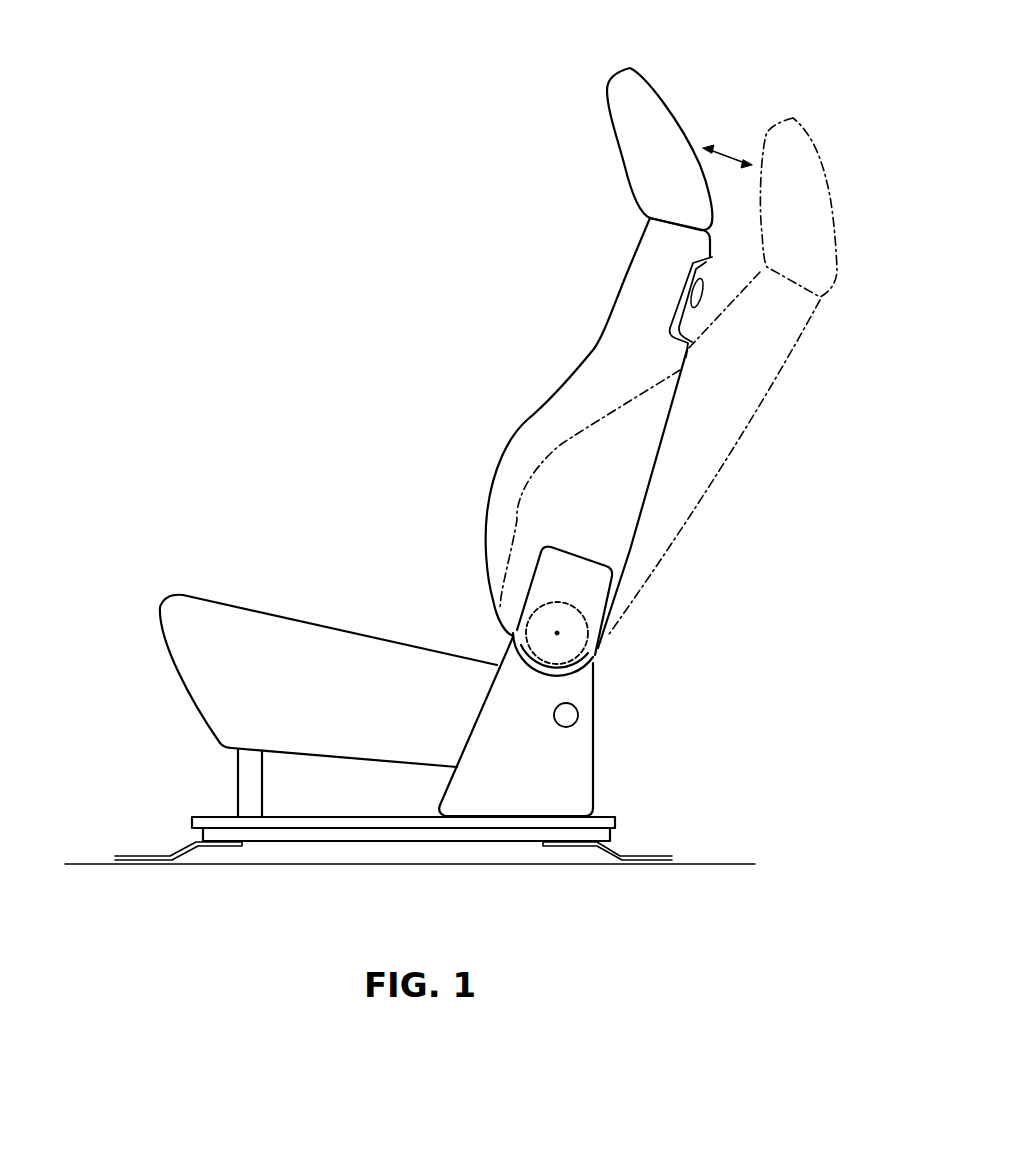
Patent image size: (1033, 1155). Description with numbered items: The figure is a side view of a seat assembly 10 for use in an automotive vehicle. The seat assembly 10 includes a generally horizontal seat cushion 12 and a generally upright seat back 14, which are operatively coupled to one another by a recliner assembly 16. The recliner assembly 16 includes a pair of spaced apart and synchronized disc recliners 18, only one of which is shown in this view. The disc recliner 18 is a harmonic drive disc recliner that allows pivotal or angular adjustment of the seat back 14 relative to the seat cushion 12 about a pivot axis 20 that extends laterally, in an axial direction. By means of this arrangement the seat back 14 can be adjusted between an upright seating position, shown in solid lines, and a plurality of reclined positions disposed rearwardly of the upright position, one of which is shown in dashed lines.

The seat assembly 10 is at (478, 178).
The seat cushion 12 is at (267, 612).
The seat back 14 is at (633, 247).
The recliner assembly 16 is at (586, 619).
The disc recliner 18 is at (566, 616).
The pivot axis 20 is at (557, 633).